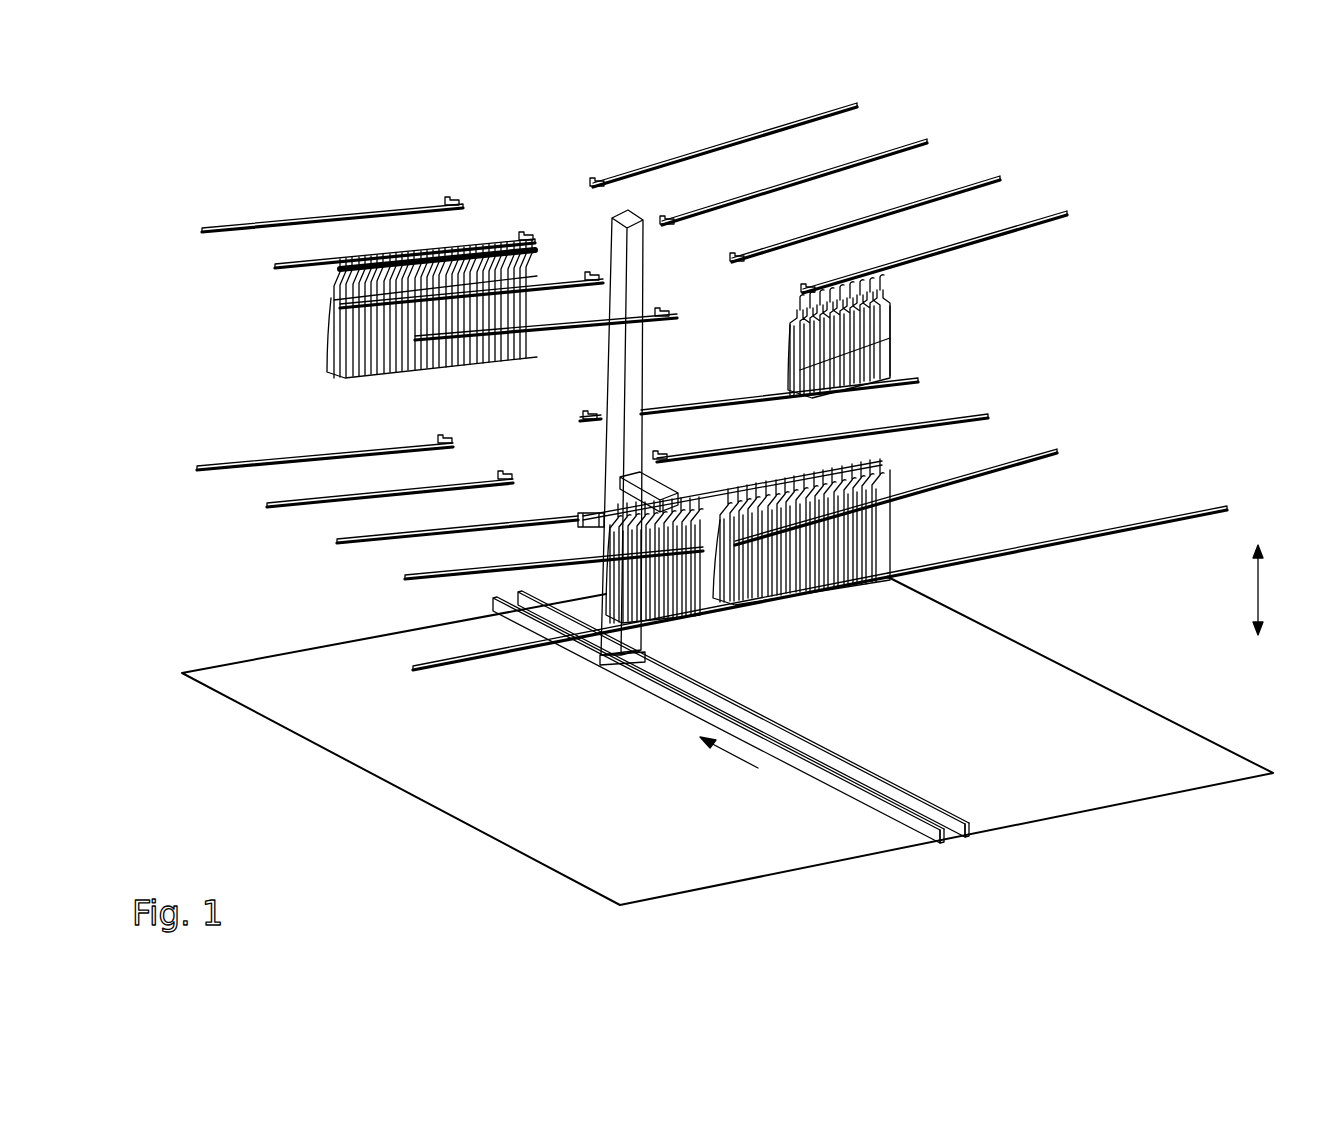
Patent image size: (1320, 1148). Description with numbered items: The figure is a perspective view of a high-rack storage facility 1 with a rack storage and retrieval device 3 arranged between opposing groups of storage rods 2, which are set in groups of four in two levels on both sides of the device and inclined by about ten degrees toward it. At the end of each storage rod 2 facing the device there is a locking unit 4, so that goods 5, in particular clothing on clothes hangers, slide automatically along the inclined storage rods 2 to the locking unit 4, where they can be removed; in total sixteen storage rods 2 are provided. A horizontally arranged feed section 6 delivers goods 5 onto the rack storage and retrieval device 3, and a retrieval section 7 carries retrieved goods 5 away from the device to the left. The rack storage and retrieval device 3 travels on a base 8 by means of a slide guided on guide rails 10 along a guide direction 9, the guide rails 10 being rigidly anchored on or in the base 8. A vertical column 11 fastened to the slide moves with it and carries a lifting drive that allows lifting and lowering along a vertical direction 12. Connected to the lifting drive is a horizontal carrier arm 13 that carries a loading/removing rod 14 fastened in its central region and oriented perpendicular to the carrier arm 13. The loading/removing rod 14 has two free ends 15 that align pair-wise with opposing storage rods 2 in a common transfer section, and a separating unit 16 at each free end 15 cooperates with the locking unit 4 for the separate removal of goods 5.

The high-rack storage facility 1 is at (1073, 261).
The storage rods 2 is at (273, 268).
The rack storage and retrieval device 3 is at (601, 244).
The locking unit 4 is at (453, 203).
The goods 5 is at (887, 330).
The feed section 6 is at (1165, 513).
The retrieval section 7 is at (450, 660).
The base 8 is at (1003, 761).
The guide direction 9 is at (745, 760).
The guide rails 10 is at (965, 837).
The vertical column 11 is at (612, 370).
The vertical direction 12 is at (1258, 594).
The carrier arm 13 is at (580, 509).
The loading/removing rod 14 is at (700, 497).
The free ends 15 is at (578, 518).
The separating unit 16 is at (605, 549).